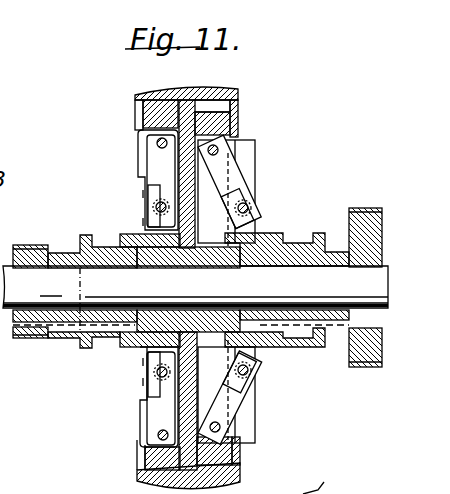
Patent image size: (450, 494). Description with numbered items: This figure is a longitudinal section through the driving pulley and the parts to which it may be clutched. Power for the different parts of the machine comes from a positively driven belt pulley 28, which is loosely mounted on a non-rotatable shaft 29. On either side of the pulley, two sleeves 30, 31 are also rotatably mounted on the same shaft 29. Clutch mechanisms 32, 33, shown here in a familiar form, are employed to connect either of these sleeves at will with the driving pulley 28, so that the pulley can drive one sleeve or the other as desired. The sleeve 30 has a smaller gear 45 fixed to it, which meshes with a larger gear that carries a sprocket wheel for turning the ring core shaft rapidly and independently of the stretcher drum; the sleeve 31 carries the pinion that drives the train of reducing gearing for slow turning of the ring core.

The belt pulley 28 is at (239, 100).
The shaft 29 is at (280, 292).
The sleeve 30 is at (293, 243).
The sleeve 31 is at (103, 243).
The clutch mechanism 32 is at (236, 176).
The clutch mechanism 33 is at (155, 163).
The gear 45 is at (365, 183).